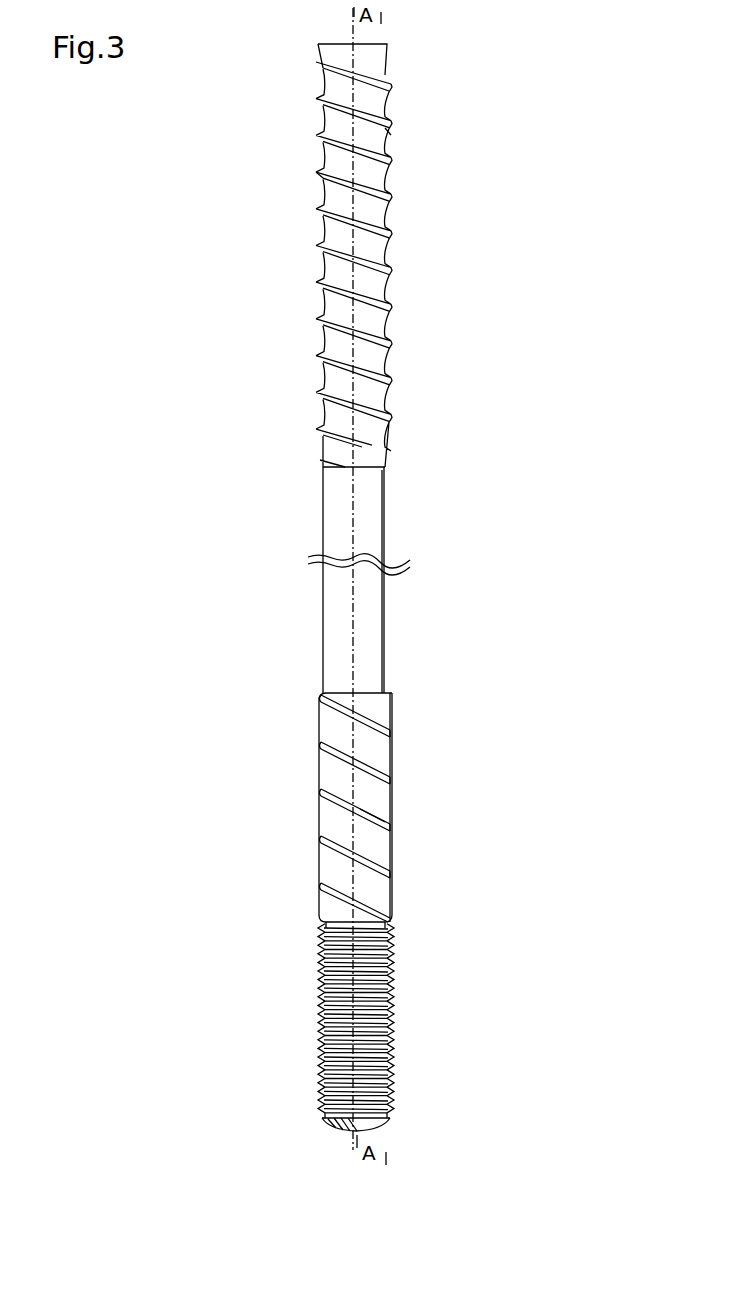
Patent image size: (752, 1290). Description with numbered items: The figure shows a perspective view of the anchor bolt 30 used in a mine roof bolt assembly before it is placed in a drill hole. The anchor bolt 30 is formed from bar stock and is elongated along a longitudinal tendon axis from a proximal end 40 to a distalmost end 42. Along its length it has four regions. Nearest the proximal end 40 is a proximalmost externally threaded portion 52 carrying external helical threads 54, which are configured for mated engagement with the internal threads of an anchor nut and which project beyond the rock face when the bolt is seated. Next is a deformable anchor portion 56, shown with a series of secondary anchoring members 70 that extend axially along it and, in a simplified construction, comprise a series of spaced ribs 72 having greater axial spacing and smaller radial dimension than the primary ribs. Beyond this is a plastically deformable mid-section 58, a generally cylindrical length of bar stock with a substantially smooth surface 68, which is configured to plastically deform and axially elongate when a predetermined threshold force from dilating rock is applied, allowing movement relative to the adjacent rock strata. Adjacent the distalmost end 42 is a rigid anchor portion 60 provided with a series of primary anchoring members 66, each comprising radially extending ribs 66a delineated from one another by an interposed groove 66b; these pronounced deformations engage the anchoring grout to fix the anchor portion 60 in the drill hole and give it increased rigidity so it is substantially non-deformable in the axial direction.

The anchor bolt 30 is at (508, 486).
The proximal end 40 is at (322, 1145).
The distalmost end 42 is at (377, 45).
The proximalmost externally threaded portion 52 is at (318, 1048).
The external helical threads 54 is at (388, 1005).
The deformable anchor portion 56 is at (331, 810).
The plastically deformable mid-section 58 is at (356, 578).
The rigid anchor portion 60 is at (325, 264).
The primary anchoring members 66 is at (391, 376).
The radially extending ribs 66a is at (317, 183).
The interposed groove 66b is at (386, 136).
The substantially smooth surface 68 is at (372, 613).
The secondary anchoring members 70 is at (392, 778).
The spaced ribs 72 is at (383, 812).